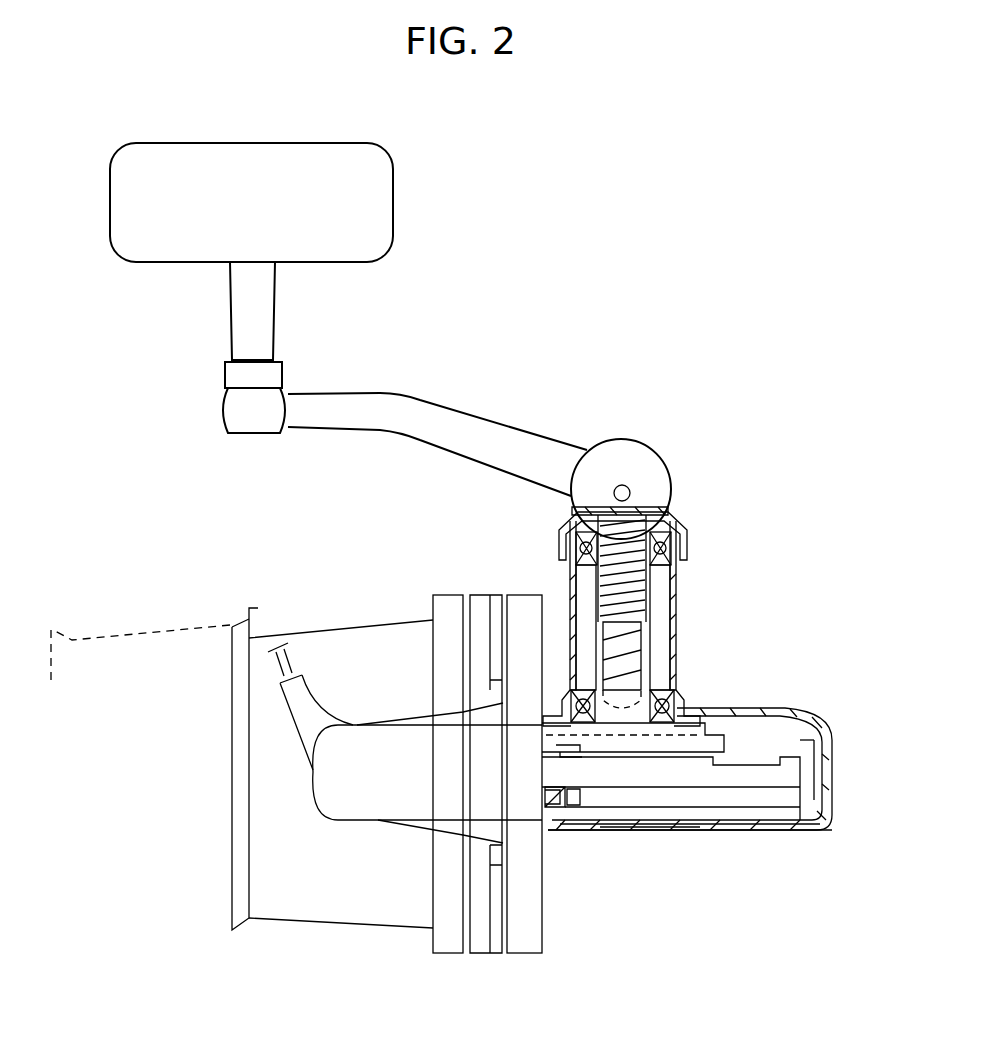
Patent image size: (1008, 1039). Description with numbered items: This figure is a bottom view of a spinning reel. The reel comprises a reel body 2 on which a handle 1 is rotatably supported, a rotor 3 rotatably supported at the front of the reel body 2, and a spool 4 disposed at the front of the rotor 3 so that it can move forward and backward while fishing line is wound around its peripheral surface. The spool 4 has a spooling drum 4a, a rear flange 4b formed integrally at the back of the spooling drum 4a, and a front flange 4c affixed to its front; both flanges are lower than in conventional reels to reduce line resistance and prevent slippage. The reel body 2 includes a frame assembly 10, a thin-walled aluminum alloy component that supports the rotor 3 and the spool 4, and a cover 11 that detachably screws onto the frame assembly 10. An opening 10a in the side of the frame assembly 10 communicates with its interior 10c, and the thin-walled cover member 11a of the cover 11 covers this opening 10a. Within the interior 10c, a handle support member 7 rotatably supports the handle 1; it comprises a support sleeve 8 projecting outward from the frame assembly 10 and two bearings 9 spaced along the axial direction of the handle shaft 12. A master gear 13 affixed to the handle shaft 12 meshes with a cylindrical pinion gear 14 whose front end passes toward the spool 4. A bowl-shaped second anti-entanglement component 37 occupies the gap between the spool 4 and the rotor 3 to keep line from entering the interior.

The handle 1 is at (525, 445).
The reel body 2 is at (809, 699).
The rotor 3 is at (530, 603).
The spool 4 is at (357, 633).
The spooling drum 4a is at (305, 631).
The rear flange 4b is at (452, 603).
The front flange 4c is at (243, 628).
The handle support member 7 is at (660, 618).
The support sleeve 8 is at (680, 578).
The bearings 9 is at (677, 553).
The frame assembly 10 is at (769, 699).
The opening 10a is at (810, 803).
The interior 10c is at (800, 748).
The cover 11 is at (726, 835).
The cover member 11a is at (666, 835).
The handle shaft 12 is at (645, 663).
The master gear 13 is at (722, 728).
The pinion gear 14 is at (550, 831).
The second anti-entanglement component 37 is at (475, 943).